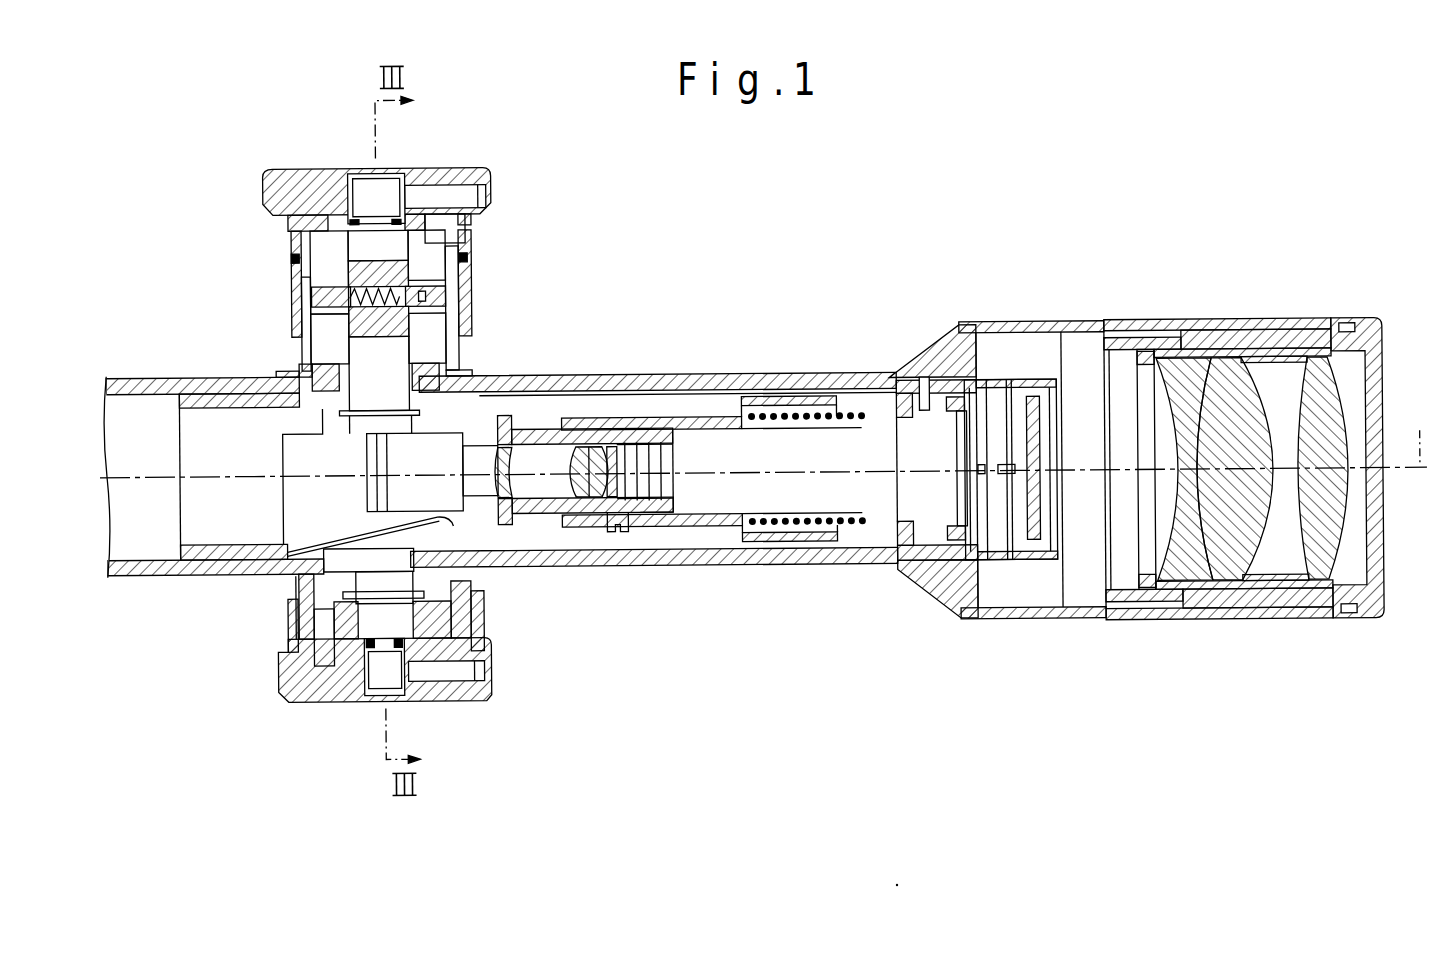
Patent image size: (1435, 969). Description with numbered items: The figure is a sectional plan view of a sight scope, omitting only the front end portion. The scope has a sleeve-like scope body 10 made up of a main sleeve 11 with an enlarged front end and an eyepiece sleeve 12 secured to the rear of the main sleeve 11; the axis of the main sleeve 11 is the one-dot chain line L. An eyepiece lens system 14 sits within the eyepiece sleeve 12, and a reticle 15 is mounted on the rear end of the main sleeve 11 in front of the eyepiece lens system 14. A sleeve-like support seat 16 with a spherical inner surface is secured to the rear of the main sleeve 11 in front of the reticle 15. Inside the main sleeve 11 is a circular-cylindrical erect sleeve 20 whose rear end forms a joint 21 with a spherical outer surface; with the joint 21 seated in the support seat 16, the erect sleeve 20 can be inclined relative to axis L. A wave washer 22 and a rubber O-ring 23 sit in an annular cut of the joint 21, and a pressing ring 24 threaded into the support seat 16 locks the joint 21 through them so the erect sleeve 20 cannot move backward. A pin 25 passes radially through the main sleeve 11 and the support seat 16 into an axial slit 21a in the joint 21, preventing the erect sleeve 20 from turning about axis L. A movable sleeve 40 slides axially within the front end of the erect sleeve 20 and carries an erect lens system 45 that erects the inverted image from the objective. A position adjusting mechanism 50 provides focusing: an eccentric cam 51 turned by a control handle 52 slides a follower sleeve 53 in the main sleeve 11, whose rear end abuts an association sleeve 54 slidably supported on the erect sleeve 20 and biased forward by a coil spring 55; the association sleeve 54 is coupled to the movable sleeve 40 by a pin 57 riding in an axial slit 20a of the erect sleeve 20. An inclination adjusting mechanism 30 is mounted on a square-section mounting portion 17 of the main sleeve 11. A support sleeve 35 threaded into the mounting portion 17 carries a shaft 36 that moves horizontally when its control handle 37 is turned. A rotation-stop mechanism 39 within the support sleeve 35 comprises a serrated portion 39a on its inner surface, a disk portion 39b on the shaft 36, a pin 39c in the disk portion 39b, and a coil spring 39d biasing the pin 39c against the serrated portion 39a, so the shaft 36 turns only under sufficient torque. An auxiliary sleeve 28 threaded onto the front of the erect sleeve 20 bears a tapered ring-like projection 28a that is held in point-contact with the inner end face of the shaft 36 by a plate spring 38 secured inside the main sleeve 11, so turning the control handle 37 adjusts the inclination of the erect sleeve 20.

The scope body 10 is at (763, 434).
The main sleeve 11 is at (568, 378).
The eyepiece sleeve 12 is at (1200, 327).
The eyepiece lens system 14 is at (1350, 522).
The reticle 15 is at (1040, 422).
The support seat 16 is at (894, 378).
The mounting portion 17 is at (473, 374).
The erect sleeve 20 is at (647, 432).
The slit 20a is at (667, 516).
The joint 21 is at (895, 567).
The slit 21a is at (902, 410).
The wave washer 22 is at (952, 522).
The O-ring 23 is at (960, 522).
The pressing ring 24 is at (970, 425).
The pin 25 is at (925, 383).
The auxiliary sleeve 28 is at (473, 440).
The projection 28a is at (340, 421).
The inclination adjusting mechanism 30 is at (417, 276).
The support sleeve 35 is at (300, 363).
The shaft 36 is at (360, 243).
The control handle 37 is at (435, 170).
The plate spring 38 is at (338, 540).
The rotation-stop mechanism 39 is at (427, 268).
The serrated portion 39a is at (327, 323).
The disk portion 39b is at (433, 286).
The pin 39c is at (333, 298).
The coil spring 39d is at (380, 300).
The movable sleeve 40 is at (606, 446).
The erect lens system 45 is at (650, 462).
The position adjusting mechanism 50 is at (422, 678).
The eccentric cam 51 is at (300, 583).
The control handle 52 is at (440, 700).
The follower sleeve 53 is at (704, 558).
The association sleeve 54 is at (713, 421).
The coil spring 55 is at (848, 540).
The pin 57 is at (633, 536).